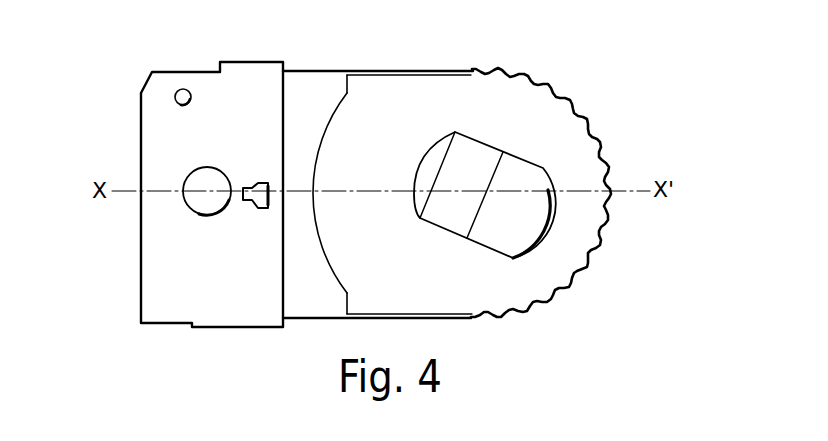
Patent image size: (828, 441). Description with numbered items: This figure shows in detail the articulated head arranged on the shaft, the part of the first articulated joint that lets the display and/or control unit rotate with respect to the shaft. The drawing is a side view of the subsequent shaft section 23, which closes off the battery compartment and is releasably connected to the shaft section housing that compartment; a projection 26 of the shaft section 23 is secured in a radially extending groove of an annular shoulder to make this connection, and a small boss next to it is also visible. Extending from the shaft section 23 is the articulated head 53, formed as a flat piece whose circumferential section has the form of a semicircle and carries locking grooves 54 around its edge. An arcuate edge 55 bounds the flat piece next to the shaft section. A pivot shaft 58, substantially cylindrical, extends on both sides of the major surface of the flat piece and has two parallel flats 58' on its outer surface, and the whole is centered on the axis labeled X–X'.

The subsequent shaft section 23 is at (233, 82).
The projection 26 is at (210, 178).
The articulated head 53 is at (505, 93).
The locking grooves 54 is at (571, 105).
The arcuate edge 55 is at (330, 250).
The pivot shaft 58 is at (501, 199).
The parallel flats 58' is at (485, 195).